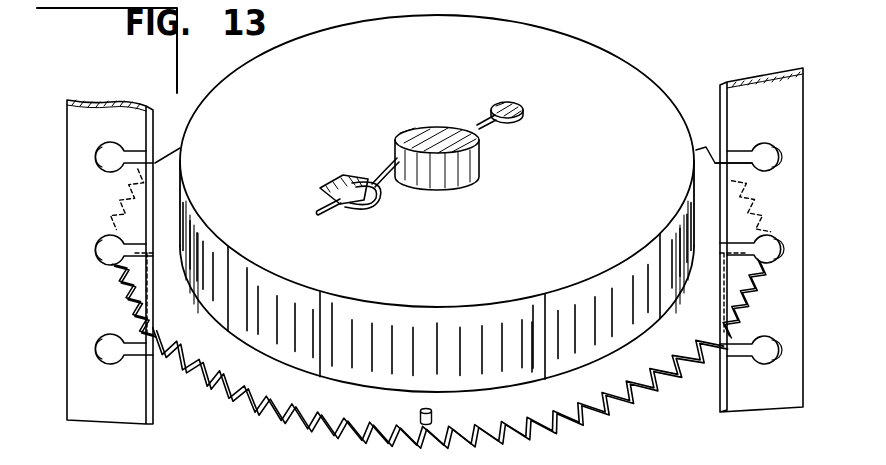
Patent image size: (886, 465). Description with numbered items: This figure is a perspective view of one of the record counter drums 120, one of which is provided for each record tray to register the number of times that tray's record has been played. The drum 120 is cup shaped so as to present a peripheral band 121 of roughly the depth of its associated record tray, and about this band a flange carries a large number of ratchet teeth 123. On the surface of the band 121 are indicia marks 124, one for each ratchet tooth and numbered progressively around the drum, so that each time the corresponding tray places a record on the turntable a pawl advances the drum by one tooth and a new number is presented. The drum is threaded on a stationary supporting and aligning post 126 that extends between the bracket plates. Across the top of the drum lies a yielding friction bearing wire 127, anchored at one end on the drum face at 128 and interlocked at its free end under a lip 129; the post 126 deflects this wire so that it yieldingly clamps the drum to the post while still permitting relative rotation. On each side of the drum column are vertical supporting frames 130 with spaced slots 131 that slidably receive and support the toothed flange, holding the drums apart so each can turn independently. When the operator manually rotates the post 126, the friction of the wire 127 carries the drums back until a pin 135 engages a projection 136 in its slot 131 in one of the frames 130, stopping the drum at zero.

The counter drum 120 is at (580, 51).
The peripheral band 121 is at (378, 333).
The ratchet teeth 123 is at (655, 390).
The indicia marks 124 is at (532, 330).
The supporting and aligning post 126 is at (460, 168).
The friction bearing wire 127 is at (390, 160).
The anchor point of bearing wire 128 is at (521, 113).
The lip 129 is at (363, 213).
The vertical supporting frame 130 is at (100, 118).
The slot 131 is at (140, 148).
The pin 135 is at (434, 413).
The projection 136 is at (758, 146).